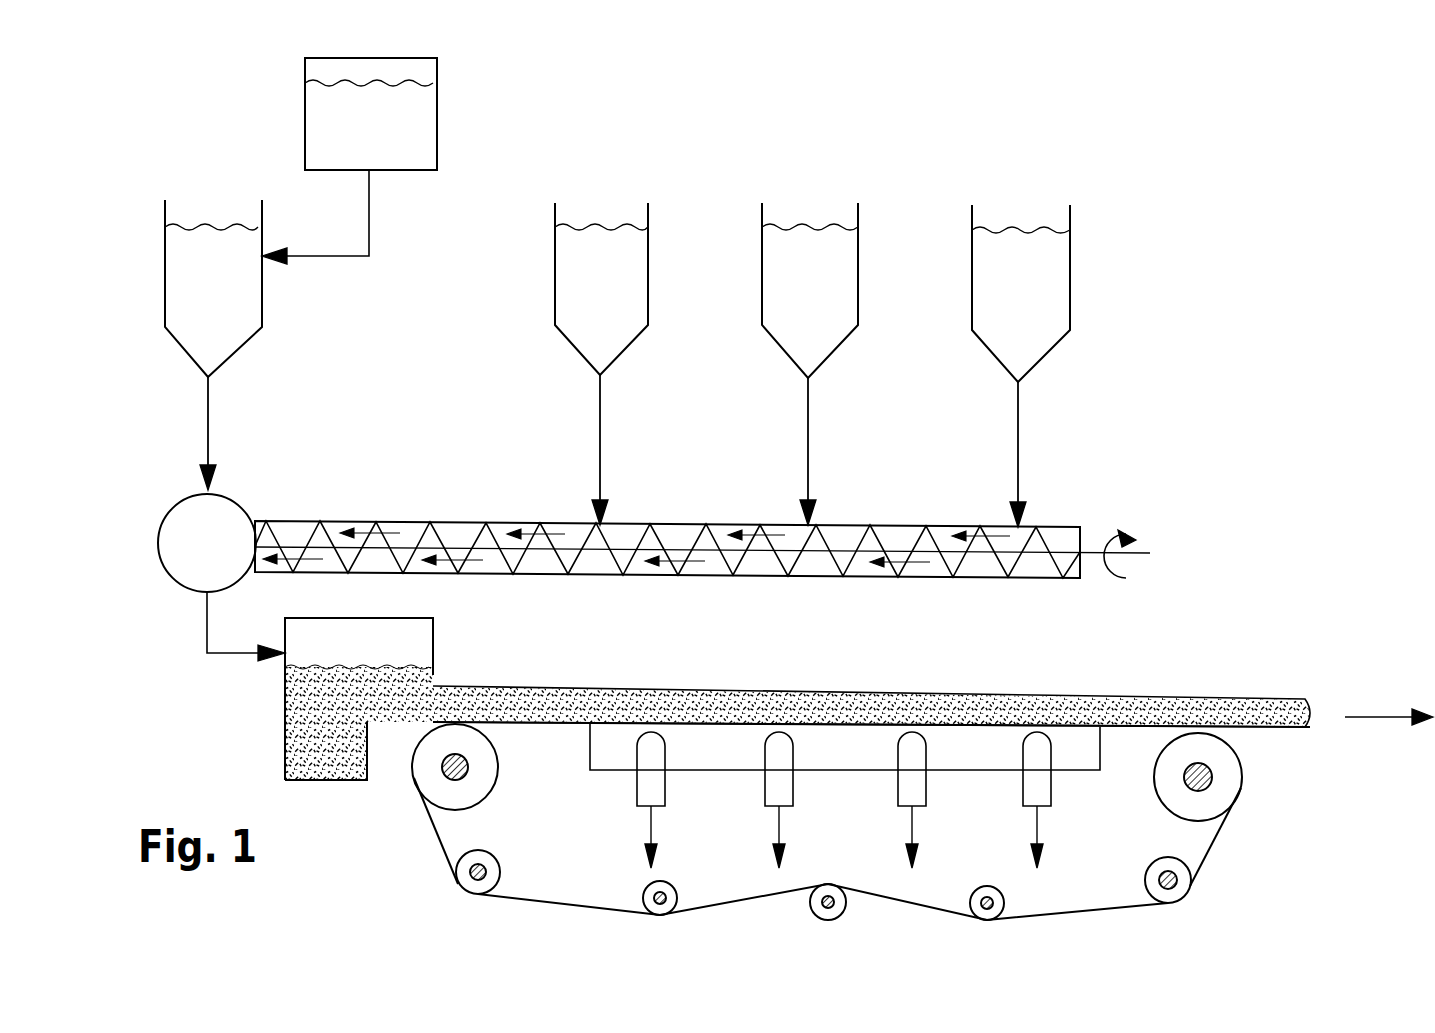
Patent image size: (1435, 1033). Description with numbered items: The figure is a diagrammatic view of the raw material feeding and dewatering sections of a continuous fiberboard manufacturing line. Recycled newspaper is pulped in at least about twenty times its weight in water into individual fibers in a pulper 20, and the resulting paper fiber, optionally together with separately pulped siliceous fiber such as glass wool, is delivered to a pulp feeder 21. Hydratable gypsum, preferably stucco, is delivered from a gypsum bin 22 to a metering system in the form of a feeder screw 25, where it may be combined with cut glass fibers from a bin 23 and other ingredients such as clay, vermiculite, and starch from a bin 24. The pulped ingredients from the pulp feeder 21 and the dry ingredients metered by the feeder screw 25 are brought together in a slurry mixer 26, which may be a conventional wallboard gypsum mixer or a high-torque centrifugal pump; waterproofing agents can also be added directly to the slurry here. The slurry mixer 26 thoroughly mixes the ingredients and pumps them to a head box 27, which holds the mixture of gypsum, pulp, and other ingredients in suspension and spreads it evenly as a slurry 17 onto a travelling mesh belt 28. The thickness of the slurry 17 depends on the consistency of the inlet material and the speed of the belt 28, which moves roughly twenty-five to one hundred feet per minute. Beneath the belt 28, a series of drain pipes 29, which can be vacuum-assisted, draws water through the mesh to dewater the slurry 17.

The slurry 17 is at (473, 690).
The pulper 20 is at (435, 128).
The pulp feeder 21 is at (172, 288).
The gypsum bin 22 is at (640, 298).
The bin 23 is at (848, 280).
The bin 24 is at (1062, 285).
The feeder screw 25 is at (852, 530).
The slurry mixer 26 is at (233, 505).
The head box 27 is at (297, 713).
The travelling mesh belt 28 is at (563, 722).
The drain pipes 29 is at (866, 750).